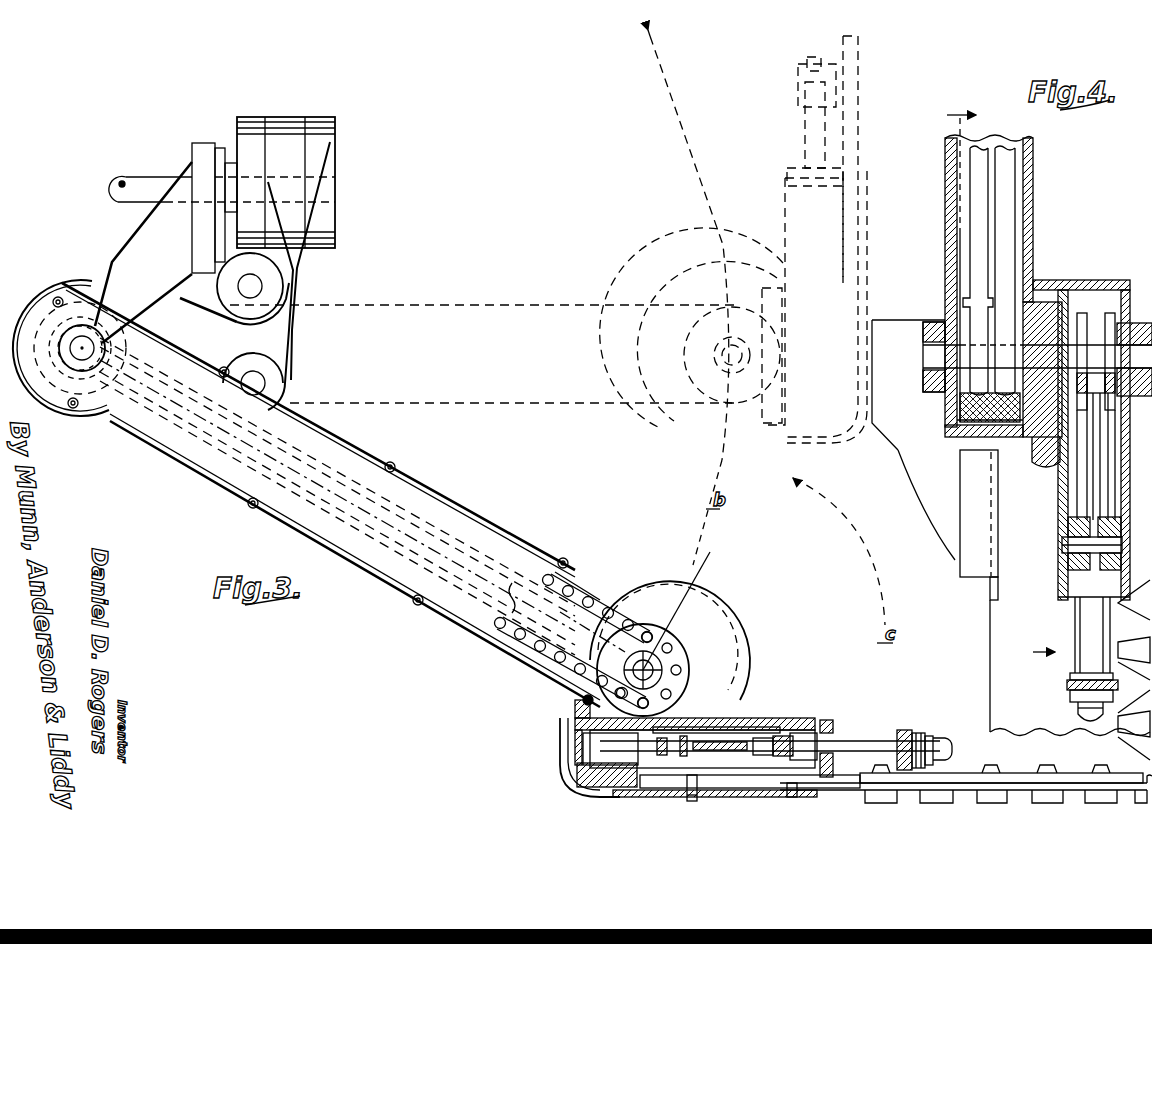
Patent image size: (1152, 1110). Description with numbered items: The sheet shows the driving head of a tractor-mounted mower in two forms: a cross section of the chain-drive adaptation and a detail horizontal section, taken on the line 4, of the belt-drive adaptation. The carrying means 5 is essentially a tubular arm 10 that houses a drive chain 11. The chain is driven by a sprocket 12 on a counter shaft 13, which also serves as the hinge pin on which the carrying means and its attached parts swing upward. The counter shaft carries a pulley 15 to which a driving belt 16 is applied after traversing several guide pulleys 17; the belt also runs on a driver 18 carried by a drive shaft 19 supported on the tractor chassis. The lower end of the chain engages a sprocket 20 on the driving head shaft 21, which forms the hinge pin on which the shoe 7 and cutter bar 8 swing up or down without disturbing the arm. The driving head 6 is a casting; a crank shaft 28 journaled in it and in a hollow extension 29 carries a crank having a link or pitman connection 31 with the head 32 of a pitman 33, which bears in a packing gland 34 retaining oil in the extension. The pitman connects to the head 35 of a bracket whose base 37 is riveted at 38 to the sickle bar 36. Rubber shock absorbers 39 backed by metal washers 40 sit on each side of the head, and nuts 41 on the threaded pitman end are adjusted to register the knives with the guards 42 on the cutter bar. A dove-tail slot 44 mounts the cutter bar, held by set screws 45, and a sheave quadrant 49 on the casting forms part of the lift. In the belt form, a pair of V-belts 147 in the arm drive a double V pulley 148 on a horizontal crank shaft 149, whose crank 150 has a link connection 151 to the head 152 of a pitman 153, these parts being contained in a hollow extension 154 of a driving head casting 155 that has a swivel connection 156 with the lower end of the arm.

In FIG. 3, the section line 4 is at (516, 590).
In FIG. 3, the carrying means 5 is at (412, 464).
In FIG. 4, the carrying means 5 is at (1037, 149).
In FIG. 4, the driving head 6 is at (954, 112).
In FIG. 3, the shoe 7 is at (745, 790).
In FIG. 4, the shoe 7 is at (935, 447).
In FIG. 3, the cutter bar 8 is at (971, 782).
In FIG. 4, the cutter bar 8 is at (1000, 620).
In FIG. 3, the arm 10 is at (437, 497).
In FIG. 4, the arm 10 is at (1020, 197).
In FIG. 3, the drive chain 11 is at (558, 566).
In FIG. 3, the sprocket 12 is at (107, 416).
In FIG. 3, the counter shaft 13 is at (82, 372).
In FIG. 3, the pulley 15 is at (56, 402).
In FIG. 3, the driving belt 16 is at (298, 300).
In FIG. 3, the guide pulleys 17 is at (272, 280).
In FIG. 3, the driver 18 is at (320, 242).
In FIG. 3, the drive shaft 19 is at (145, 186).
In FIG. 3, the sprocket 20 is at (655, 645).
In FIG. 3, the driving head shaft 21 is at (662, 662).
In FIG. 3, the crank shaft 28 is at (603, 795).
In FIG. 3, the hollow extension 29 is at (750, 740).
In FIG. 3, the link or pitman connection 31 is at (740, 728).
In FIG. 3, the head 32 is at (770, 745).
In FIG. 3, the pitman 33 is at (846, 750).
In FIG. 3, the packing gland 34 is at (792, 732).
In FIG. 3, the head 35 is at (902, 732).
In FIG. 4, the head 35 is at (1070, 686).
In FIG. 3, the sickle bar 36 is at (996, 776).
In FIG. 3, the base 37 is at (947, 774).
In FIG. 3, the rivets 38 is at (990, 774).
In FIG. 3, the rubber shock absorbers 39 is at (912, 737).
In FIG. 4, the rubber shock absorbers 39 is at (1075, 662).
In FIG. 3, the metal washers 40 is at (926, 740).
In FIG. 4, the metal washers 40 is at (1078, 650).
In FIG. 3, the nuts 41 is at (946, 740).
In FIG. 4, the nuts 41 is at (1094, 722).
In FIG. 3, the guards 42 is at (986, 802).
In FIG. 3, the dove-tail slot 44 is at (688, 797).
In FIG. 3, the set screws 45 is at (790, 797).
In FIG. 3, the sheave quadrant 49 is at (691, 602).
In FIG. 4, the sheave quadrant 49 is at (1030, 455).
In FIG. 4, the V-belts 147 is at (1005, 196).
In FIG. 4, the double V pulley 148 is at (980, 395).
In FIG. 4, the horizontal crank shaft 149 is at (1138, 300).
In FIG. 4, the crank 150 is at (1060, 470).
In FIG. 4, the link connection 151 is at (1068, 525).
In FIG. 4, the head 152 is at (1062, 545).
In FIG. 4, the pitman 153 is at (1088, 580).
In FIG. 4, the hollow extension 154 is at (1085, 475).
In FIG. 4, the driving head casting 155 is at (1084, 280).
In FIG. 4, the swivel connection 156 is at (1045, 300).